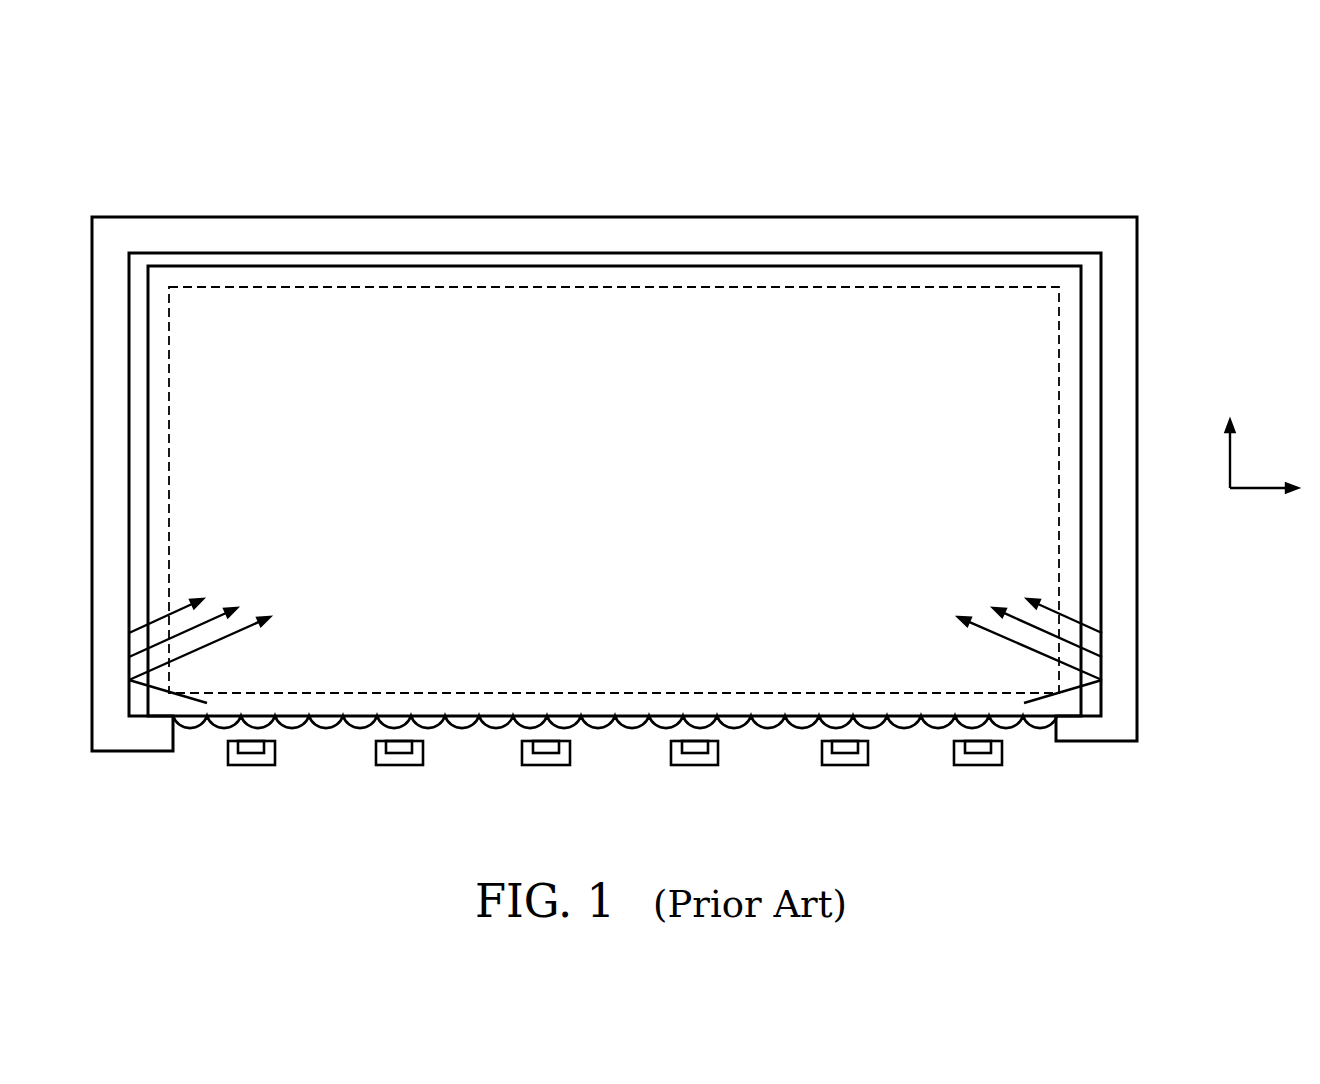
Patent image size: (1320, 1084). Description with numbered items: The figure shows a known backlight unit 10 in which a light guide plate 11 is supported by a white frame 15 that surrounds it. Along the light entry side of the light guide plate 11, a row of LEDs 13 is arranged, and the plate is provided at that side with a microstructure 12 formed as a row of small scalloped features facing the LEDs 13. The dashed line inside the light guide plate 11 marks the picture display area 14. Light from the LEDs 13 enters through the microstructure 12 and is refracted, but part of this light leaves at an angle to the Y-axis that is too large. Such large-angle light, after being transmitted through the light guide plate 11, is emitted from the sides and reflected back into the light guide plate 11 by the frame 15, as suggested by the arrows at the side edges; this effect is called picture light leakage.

The backlight unit 10 is at (702, 460).
The light guide plate 11 is at (1068, 553).
The microstructure 12 is at (765, 728).
The LEDs 13 is at (976, 766).
The picture display area 14 is at (1022, 440).
The frame 15 is at (1124, 311).